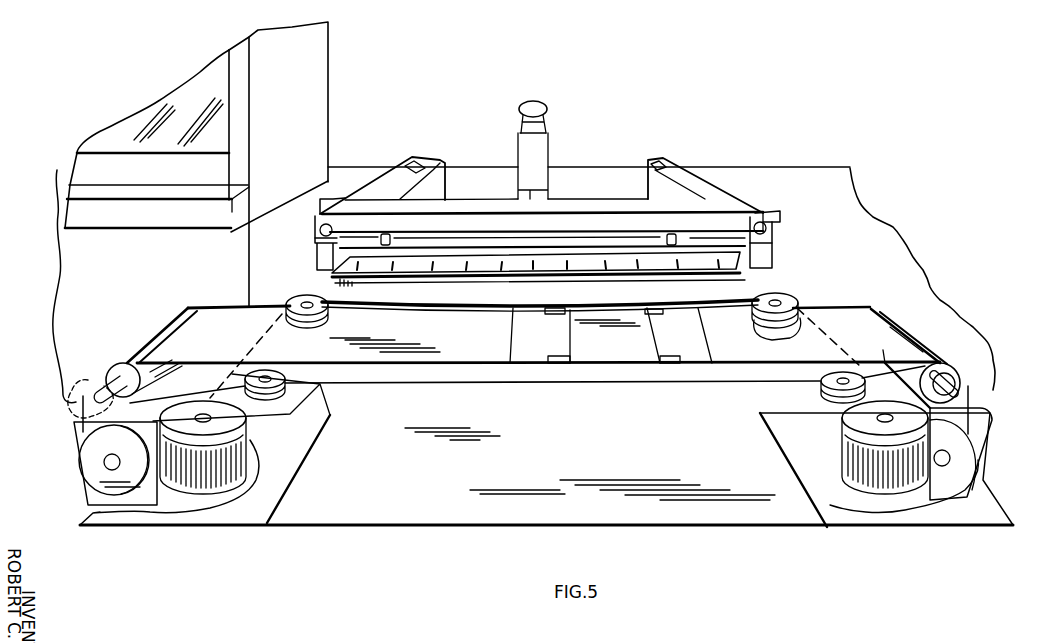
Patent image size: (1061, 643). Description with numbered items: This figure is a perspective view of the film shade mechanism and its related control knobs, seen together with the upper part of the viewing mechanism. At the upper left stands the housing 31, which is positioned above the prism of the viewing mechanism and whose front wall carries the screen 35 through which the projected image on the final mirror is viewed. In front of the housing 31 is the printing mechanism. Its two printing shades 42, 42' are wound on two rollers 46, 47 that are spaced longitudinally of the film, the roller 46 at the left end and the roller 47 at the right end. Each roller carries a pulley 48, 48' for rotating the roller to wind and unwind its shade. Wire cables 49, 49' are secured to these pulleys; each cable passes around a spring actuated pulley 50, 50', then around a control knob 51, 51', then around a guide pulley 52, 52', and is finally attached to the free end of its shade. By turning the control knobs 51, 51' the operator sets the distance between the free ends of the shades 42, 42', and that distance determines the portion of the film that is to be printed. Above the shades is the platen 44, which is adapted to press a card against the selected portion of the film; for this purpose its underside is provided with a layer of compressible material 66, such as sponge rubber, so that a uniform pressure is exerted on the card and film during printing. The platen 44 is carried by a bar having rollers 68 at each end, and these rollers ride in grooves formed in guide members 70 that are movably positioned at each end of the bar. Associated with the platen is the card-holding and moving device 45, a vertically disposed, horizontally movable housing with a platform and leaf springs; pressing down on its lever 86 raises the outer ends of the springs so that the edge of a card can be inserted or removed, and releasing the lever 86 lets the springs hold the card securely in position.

The housing 31 is at (306, 77).
The screen 35 is at (186, 100).
The printing shade 42 is at (533, 354).
The printing shade 42' is at (702, 335).
The platen 44 is at (756, 266).
The card-holding and moving device 45 is at (541, 160).
The roller 46 is at (127, 374).
The roller 47 is at (952, 368).
The pulley 48 is at (71, 397).
The pulley 48' is at (979, 383).
The wire cable 49 is at (450, 383).
The wire cable 49' is at (998, 410).
The spring actuated pulley 50 is at (115, 463).
The spring actuated pulley 50' is at (972, 454).
The control knob 51 is at (228, 447).
The control knob 51' is at (863, 447).
The guide pulley 52 is at (273, 342).
The guide pulley 52' is at (808, 342).
The layer of compressible material 66 is at (745, 281).
The rollers 68 is at (331, 233).
The guide members 70 is at (330, 213).
The lever 86 is at (547, 110).